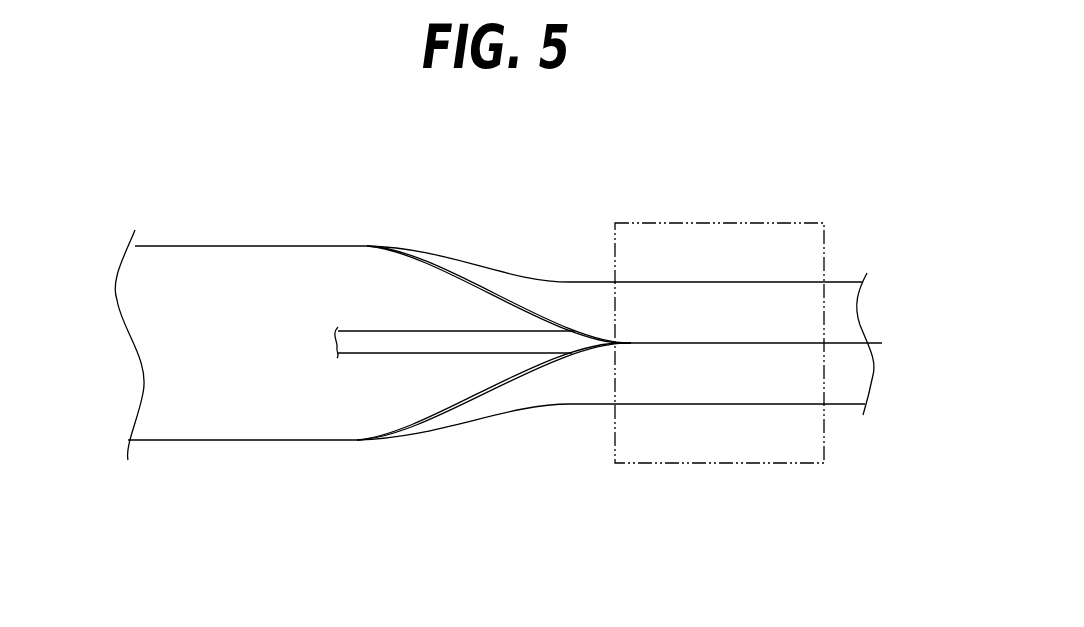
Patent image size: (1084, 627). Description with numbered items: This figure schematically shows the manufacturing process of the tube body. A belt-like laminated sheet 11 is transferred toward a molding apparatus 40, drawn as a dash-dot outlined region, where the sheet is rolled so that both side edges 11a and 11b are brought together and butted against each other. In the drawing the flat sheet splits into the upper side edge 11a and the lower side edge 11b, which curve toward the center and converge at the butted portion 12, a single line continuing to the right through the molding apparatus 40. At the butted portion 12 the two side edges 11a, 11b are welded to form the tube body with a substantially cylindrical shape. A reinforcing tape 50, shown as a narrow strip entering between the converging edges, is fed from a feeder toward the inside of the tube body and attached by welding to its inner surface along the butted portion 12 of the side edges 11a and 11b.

The laminated sheet 11 is at (255, 246).
The side edge 11a is at (500, 298).
The side edge 11b is at (488, 398).
The reinforcing tape 50 is at (413, 340).
The butted portion 12 is at (745, 338).
The molding apparatus 40 is at (689, 222).